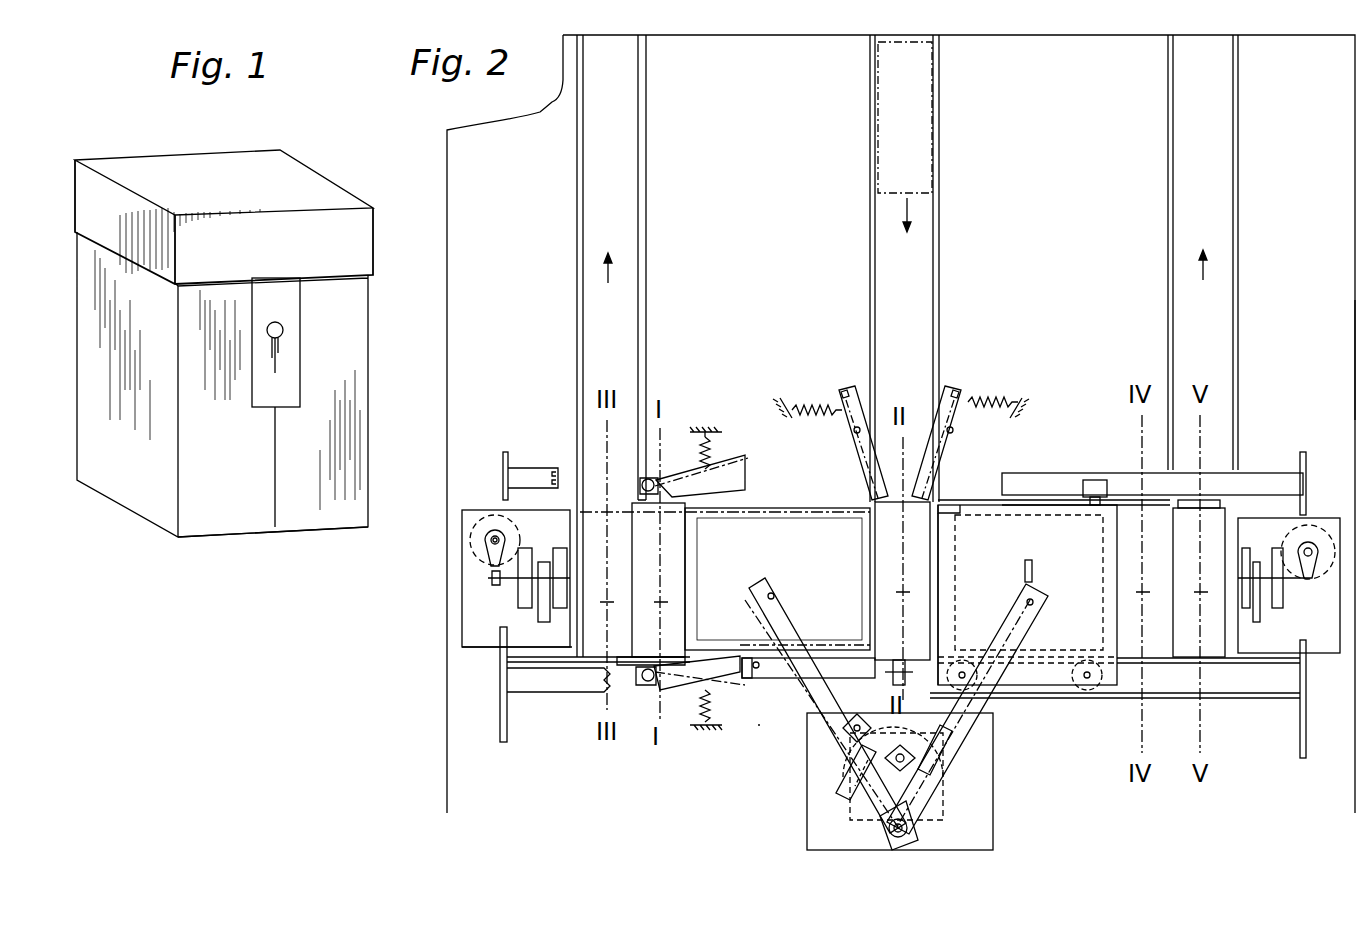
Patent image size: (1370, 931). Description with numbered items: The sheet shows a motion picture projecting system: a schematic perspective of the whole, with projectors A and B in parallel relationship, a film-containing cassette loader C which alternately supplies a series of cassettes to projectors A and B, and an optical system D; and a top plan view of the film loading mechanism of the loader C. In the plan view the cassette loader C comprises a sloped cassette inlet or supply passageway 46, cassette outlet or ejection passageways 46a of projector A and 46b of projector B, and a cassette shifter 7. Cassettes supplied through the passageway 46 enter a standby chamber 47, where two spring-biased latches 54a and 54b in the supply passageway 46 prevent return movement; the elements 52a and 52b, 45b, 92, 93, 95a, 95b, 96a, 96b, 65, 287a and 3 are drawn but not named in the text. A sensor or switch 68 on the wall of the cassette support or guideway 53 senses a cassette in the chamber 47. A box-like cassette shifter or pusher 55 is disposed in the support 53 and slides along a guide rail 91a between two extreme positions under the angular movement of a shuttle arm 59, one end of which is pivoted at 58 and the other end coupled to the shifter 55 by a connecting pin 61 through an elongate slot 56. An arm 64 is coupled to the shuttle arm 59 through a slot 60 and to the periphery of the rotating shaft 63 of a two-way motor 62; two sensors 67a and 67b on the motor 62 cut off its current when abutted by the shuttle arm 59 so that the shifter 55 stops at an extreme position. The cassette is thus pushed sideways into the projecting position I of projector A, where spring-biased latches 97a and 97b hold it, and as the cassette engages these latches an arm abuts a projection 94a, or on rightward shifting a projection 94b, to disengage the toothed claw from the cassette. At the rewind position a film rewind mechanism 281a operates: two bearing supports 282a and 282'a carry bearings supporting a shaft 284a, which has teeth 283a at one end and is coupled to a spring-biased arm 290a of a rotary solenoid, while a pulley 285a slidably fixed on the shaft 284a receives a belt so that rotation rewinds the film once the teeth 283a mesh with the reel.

In FIG. 1, the projector A is at (212, 528).
In FIG. 1, the projector B is at (360, 447).
In FIG. 1, the cassette loader C is at (358, 242).
In FIG. 1, the optical system D is at (296, 352).
In FIG. 2, the frame 3 is at (1345, 382).
In FIG. 2, the cassette shifter 7 is at (752, 759).
In FIG. 2, the supply passageway 46 is at (924, 285).
In FIG. 2, the ejection passageway 46a is at (636, 178).
In FIG. 2, the ejection passageway 46b is at (1226, 186).
In FIG. 2, the projecting position I is at (924, 150).
In FIG. 2, the stop 45b is at (1094, 482).
In FIG. 2, the standby chamber 47 is at (875, 562).
In FIG. 2, the left guide lever 52a is at (856, 432).
In FIG. 2, the right guide lever 52b is at (952, 432).
In FIG. 2, the cassette support 53 is at (1030, 462).
In FIG. 2, the spring-biased latch 54a is at (848, 456).
In FIG. 2, the spring-biased latch 54b is at (935, 475).
In FIG. 2, the cassette shifter 55 is at (744, 560).
In FIG. 2, the elongate slot 56 is at (1036, 568).
In FIG. 2, the pivot 58 is at (908, 832).
In FIG. 2, the shuttle arm 59 is at (960, 700).
In FIG. 2, the slot 60 is at (950, 760).
In FIG. 2, the connecting pin 61 is at (1034, 604).
In FIG. 2, the two-way motor 62 is at (993, 805).
In FIG. 2, the rotating shaft 63 is at (915, 770).
In FIG. 2, the arm 64 is at (880, 805).
In FIG. 2, the link 65 is at (900, 785).
In FIG. 2, the sensor 67a is at (858, 719).
In FIG. 2, the sensor 67b is at (950, 735).
In FIG. 2, the sensor 68 is at (940, 648).
In FIG. 2, the guide rail 91a is at (1130, 690).
In FIG. 2, the pin 92 is at (907, 668).
In FIG. 2, the bar 93 is at (772, 684).
In FIG. 2, the projection 94a is at (780, 733).
In FIG. 2, the projection 94b is at (1078, 700).
In FIG. 2, the upper pivot 95a is at (650, 480).
In FIG. 2, the lower pivot 95b is at (640, 680).
In FIG. 2, the upper spring 96a is at (716, 450).
In FIG. 2, the lower spring 96b is at (680, 729).
In FIG. 2, the spring-biased latch 97a is at (742, 480).
In FIG. 2, the spring-biased latch 97b is at (722, 705).
In FIG. 2, the film rewind mechanism 281a is at (478, 640).
In FIG. 2, the bearing support 282a is at (540, 560).
In FIG. 2, the bearing support 282'a is at (499, 522).
In FIG. 2, the teeth 283a is at (475, 518).
In FIG. 2, the shaft 284a is at (560, 560).
In FIG. 2, the pulley 285a is at (548, 640).
In FIG. 2, the nut 287a is at (492, 584).
In FIG. 2, the spring-biased arm 290a is at (487, 562).